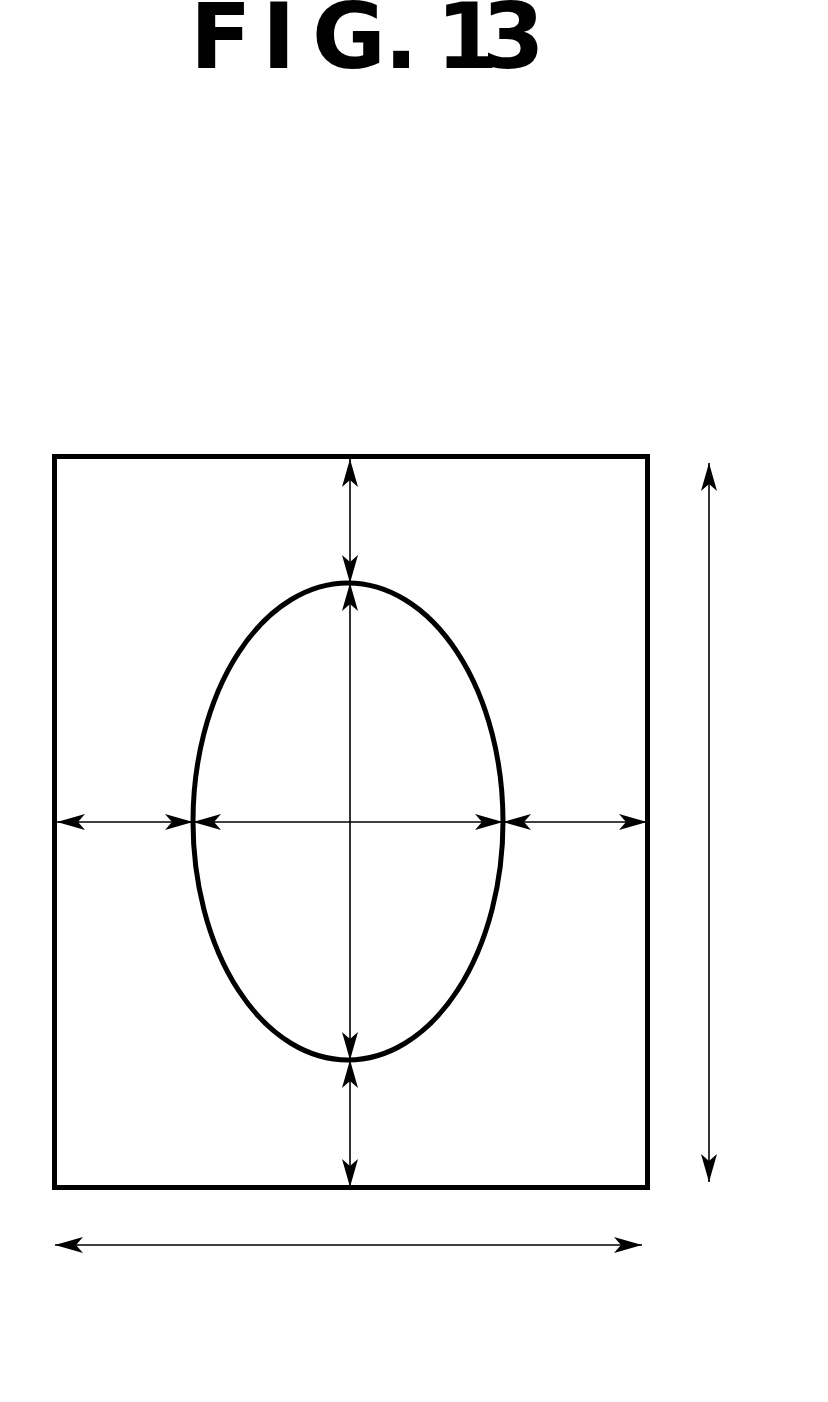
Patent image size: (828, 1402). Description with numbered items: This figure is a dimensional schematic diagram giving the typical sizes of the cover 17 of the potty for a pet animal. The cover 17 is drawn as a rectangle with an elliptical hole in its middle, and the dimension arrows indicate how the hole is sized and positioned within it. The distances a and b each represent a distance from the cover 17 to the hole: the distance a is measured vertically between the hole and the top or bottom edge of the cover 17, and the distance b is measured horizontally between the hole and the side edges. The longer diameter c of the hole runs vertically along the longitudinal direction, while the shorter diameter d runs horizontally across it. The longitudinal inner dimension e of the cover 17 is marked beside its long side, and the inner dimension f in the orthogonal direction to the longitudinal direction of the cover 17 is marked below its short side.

The cover 17 is at (478, 455).
The distance from the cover to the hole a is at (370, 823).
The distance from the cover to the hole b is at (352, 796).
The longer diameter of the hole c is at (366, 821).
The shorter diameter of the hole d is at (348, 796).
The longitudinal inner dimension of the cover e is at (729, 822).
The inner dimension in the orthogonal direction f is at (348, 1279).